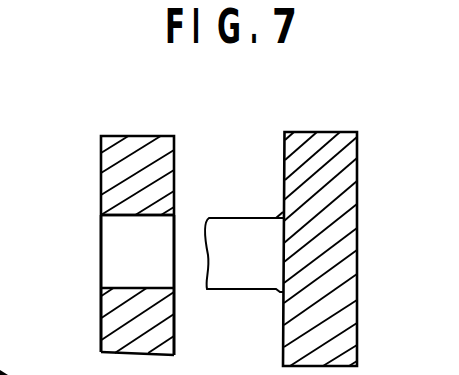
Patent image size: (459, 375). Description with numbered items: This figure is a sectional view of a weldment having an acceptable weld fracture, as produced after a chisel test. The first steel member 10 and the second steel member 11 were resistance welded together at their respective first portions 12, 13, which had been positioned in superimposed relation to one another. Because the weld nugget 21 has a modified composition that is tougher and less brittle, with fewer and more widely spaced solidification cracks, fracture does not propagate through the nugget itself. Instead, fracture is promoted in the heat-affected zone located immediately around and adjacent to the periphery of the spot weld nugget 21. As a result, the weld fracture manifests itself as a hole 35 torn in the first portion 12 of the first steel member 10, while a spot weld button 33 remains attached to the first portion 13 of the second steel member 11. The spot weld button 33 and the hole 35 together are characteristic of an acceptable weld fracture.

The first steel member 10 is at (131, 167).
The hole 35 is at (131, 216).
The first portion 12 is at (100, 270).
The second steel member 11 is at (327, 175).
The first portion 13 is at (323, 260).
The spot weld button 33 is at (228, 238).
The weld nugget 21 is at (0, 12).